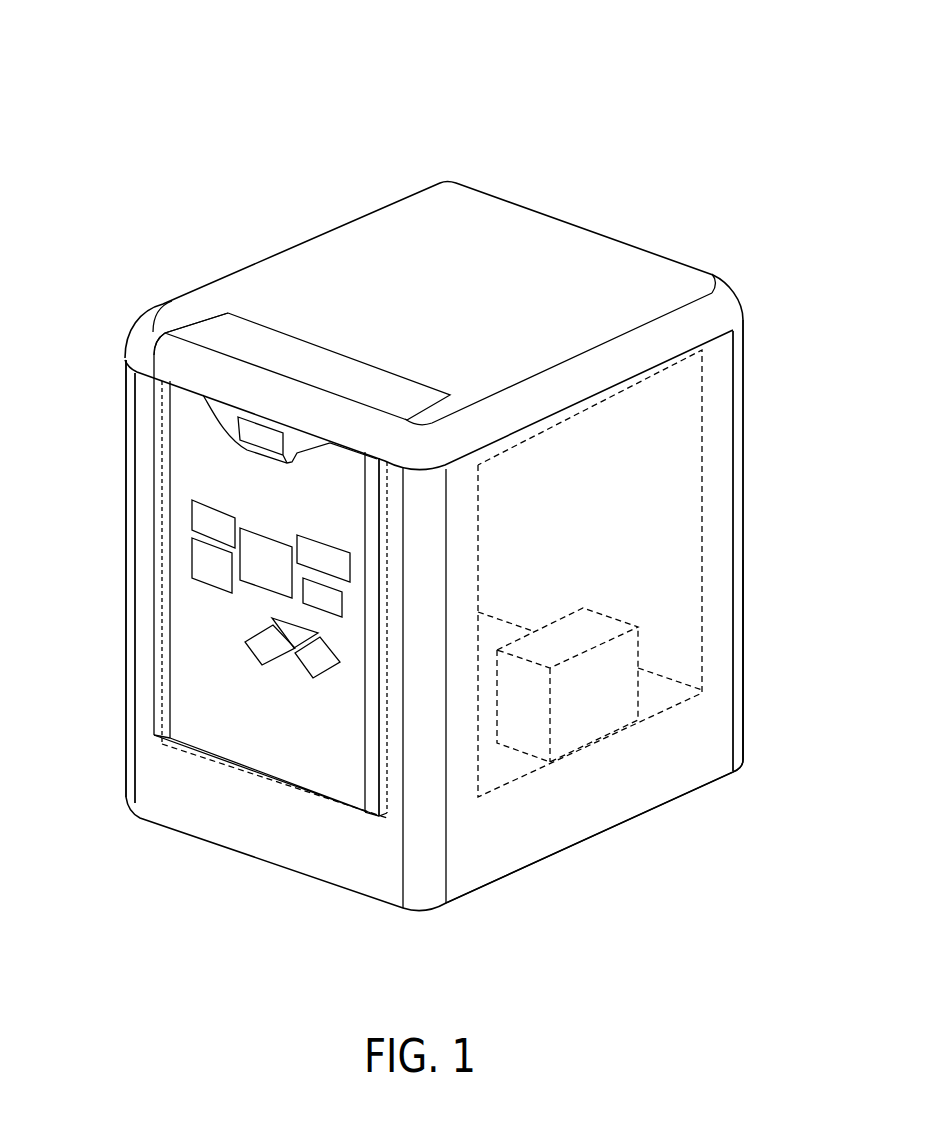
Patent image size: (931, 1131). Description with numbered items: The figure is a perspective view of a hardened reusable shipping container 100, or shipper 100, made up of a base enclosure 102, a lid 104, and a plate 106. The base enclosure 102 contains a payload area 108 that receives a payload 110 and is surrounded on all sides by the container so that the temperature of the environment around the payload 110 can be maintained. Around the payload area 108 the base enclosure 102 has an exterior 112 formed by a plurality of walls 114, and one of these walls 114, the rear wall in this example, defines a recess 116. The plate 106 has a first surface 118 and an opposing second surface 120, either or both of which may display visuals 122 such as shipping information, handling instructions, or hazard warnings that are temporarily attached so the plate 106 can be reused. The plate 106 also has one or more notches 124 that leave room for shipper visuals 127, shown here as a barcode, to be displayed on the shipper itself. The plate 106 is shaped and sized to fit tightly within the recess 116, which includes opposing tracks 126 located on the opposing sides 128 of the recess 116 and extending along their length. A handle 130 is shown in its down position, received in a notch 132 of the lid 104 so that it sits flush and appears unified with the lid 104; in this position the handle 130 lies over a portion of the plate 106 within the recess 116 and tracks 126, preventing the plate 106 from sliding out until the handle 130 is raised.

The hardened reusable shipping container 100 is at (697, 100).
The base enclosure 102 is at (745, 396).
The lid 104 is at (745, 301).
The plate 106 is at (172, 504).
The payload area 108 is at (705, 530).
The payload 110 is at (567, 612).
The exterior 112 is at (745, 598).
The walls 114 is at (143, 578).
The recess 116 is at (385, 817).
The first surface 118 is at (197, 748).
The second surface 120 is at (387, 713).
The visuals 122 is at (317, 678).
The notches 124 is at (379, 458).
The tracks 126 is at (153, 657).
The shipper visuals 127 is at (267, 437).
The sides 128 is at (158, 524).
The handle 130 is at (188, 360).
The notch 132 is at (262, 322).